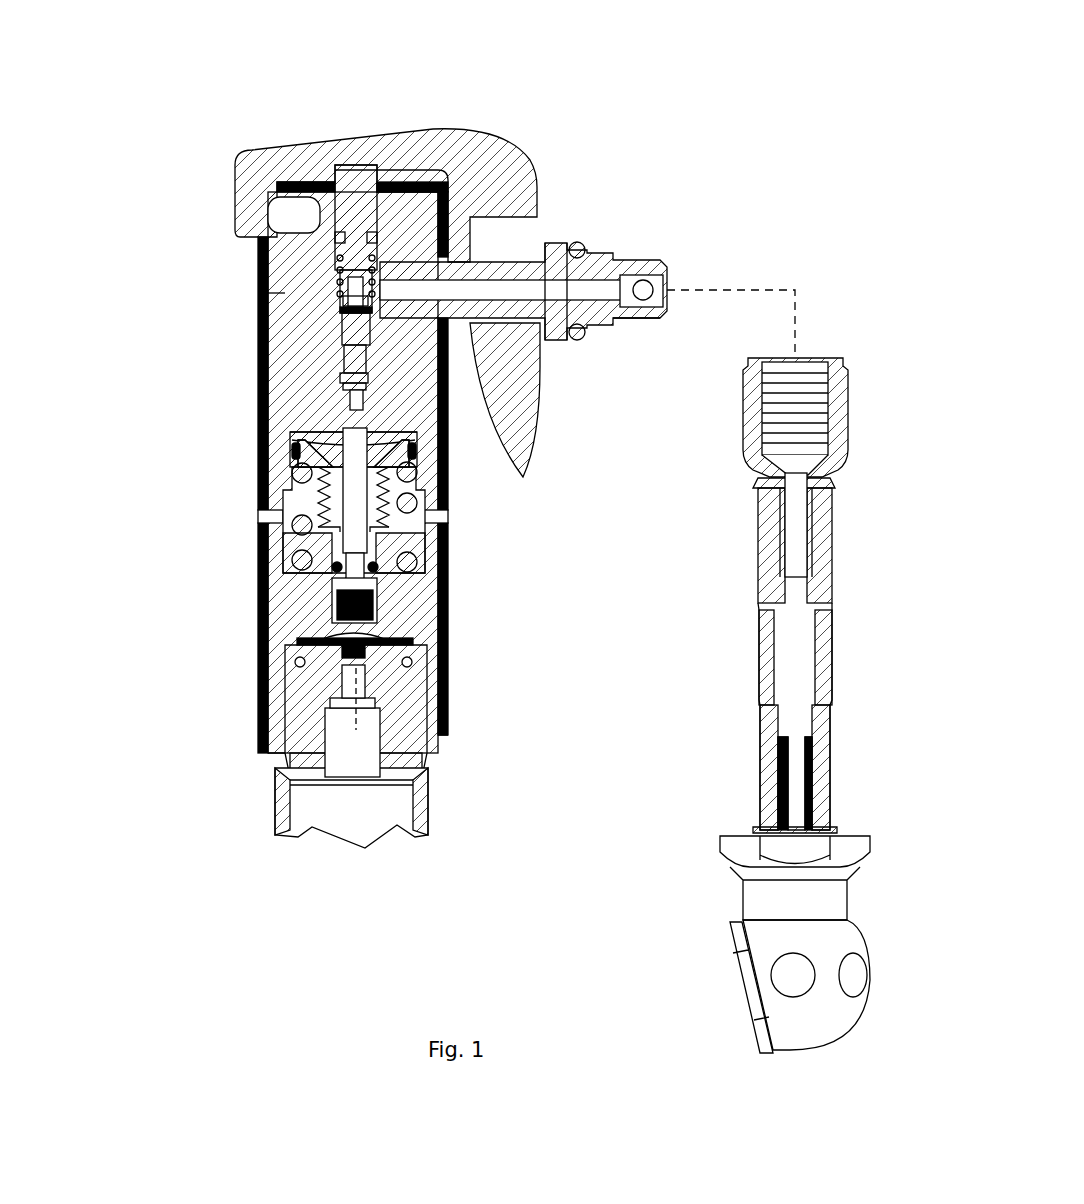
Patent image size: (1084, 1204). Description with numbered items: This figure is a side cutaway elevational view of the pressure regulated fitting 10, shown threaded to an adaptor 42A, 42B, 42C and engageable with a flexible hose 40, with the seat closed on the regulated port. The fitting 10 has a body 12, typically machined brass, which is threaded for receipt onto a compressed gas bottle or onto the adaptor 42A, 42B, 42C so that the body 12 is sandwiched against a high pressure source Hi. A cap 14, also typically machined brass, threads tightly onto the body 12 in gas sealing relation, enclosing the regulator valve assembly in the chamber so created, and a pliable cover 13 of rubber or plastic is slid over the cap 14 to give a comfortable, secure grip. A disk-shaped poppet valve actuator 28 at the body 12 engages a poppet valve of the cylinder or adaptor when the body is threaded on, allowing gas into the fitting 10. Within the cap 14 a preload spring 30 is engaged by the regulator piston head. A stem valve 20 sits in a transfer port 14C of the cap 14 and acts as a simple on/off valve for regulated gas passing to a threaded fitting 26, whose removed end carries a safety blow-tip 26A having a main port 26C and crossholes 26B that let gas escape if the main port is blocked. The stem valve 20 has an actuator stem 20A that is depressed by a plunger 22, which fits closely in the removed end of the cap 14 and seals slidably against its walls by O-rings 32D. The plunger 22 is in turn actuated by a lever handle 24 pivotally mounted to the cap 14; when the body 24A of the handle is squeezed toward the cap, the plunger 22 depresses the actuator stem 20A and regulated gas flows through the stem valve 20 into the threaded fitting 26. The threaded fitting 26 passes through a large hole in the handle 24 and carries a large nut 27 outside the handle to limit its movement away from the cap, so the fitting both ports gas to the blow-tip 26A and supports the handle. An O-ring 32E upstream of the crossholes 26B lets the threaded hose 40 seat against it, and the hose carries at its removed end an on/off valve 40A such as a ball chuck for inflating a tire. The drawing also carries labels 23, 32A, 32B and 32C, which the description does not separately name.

The pressure regulated fitting 10 is at (380, 68).
The body 12 is at (440, 613).
The cover 13 is at (258, 268).
The cap 14 is at (270, 362).
The transfer port 14C is at (455, 472).
The stem valve 20 is at (300, 332).
The actuator stem 20A is at (258, 293).
The plunger 22 is at (353, 177).
The plunger seal 23 is at (338, 291).
The lever handle 24 is at (512, 142).
The body of the handle 24A is at (518, 448).
The threaded fitting 26 is at (555, 243).
The safety blow-tip 26A is at (670, 253).
The crossholes 26B is at (647, 323).
The main port 26C is at (670, 295).
The large nut 27 is at (558, 243).
The poppet valve actuator 28 is at (440, 635).
The preload spring 30 is at (290, 427).
The O-ring 32A is at (298, 662).
The O-ring 32B is at (337, 567).
The O-ring 32C is at (293, 450).
The O-rings 32D is at (338, 238).
The O-ring 32E is at (577, 340).
The flexible hose 40 is at (748, 643).
The on/off valve 40A is at (715, 927).
The adaptor 42A is at (470, 746).
The adaptor 42B is at (470, 746).
The adaptor 42C is at (428, 795).
The high pressure source Hi is at (358, 690).